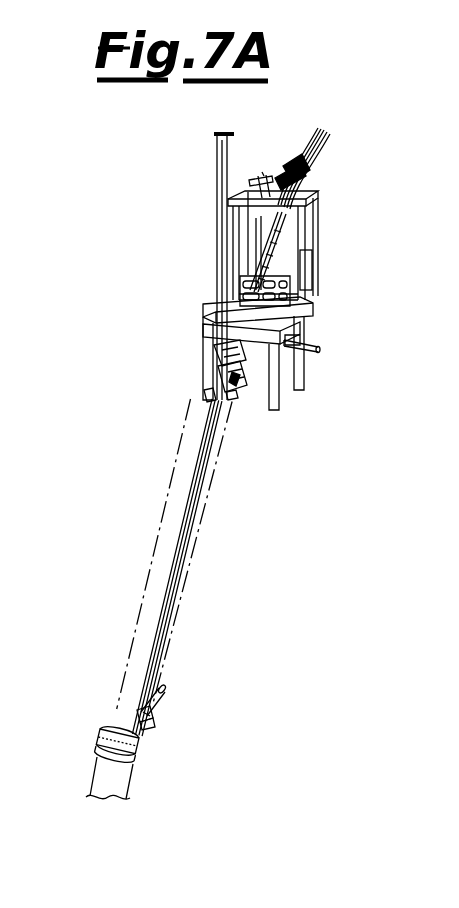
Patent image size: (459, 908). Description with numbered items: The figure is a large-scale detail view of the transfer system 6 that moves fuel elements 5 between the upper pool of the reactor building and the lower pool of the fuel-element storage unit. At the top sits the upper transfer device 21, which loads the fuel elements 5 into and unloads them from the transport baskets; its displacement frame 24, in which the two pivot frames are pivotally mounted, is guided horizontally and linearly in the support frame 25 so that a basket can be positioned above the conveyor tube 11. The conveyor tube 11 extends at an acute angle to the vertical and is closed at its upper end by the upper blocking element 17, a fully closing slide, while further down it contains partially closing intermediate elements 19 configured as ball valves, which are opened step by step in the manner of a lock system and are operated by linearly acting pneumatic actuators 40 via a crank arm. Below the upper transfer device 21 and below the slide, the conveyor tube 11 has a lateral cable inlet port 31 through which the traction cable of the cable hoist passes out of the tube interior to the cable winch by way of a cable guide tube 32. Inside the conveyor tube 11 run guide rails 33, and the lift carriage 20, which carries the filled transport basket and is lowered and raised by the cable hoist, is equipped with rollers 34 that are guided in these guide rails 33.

The fuel element 5 is at (297, 147).
The transfer system 6 is at (85, 800).
The conveyor tube 11 is at (203, 514).
The upper blocking element 17 is at (286, 353).
The intermediate element 19 is at (96, 723).
The lift carriage 20 is at (210, 394).
The upper transfer device 21 is at (186, 241).
The displacement frame 24 is at (310, 199).
The support frame 25 is at (305, 326).
The cable inlet port 31 is at (198, 393).
The cable guide tube 32 is at (217, 167).
The guide rail 33 is at (205, 481).
The roller 34 is at (230, 368).
The pneumatic actuator 40 is at (172, 698).